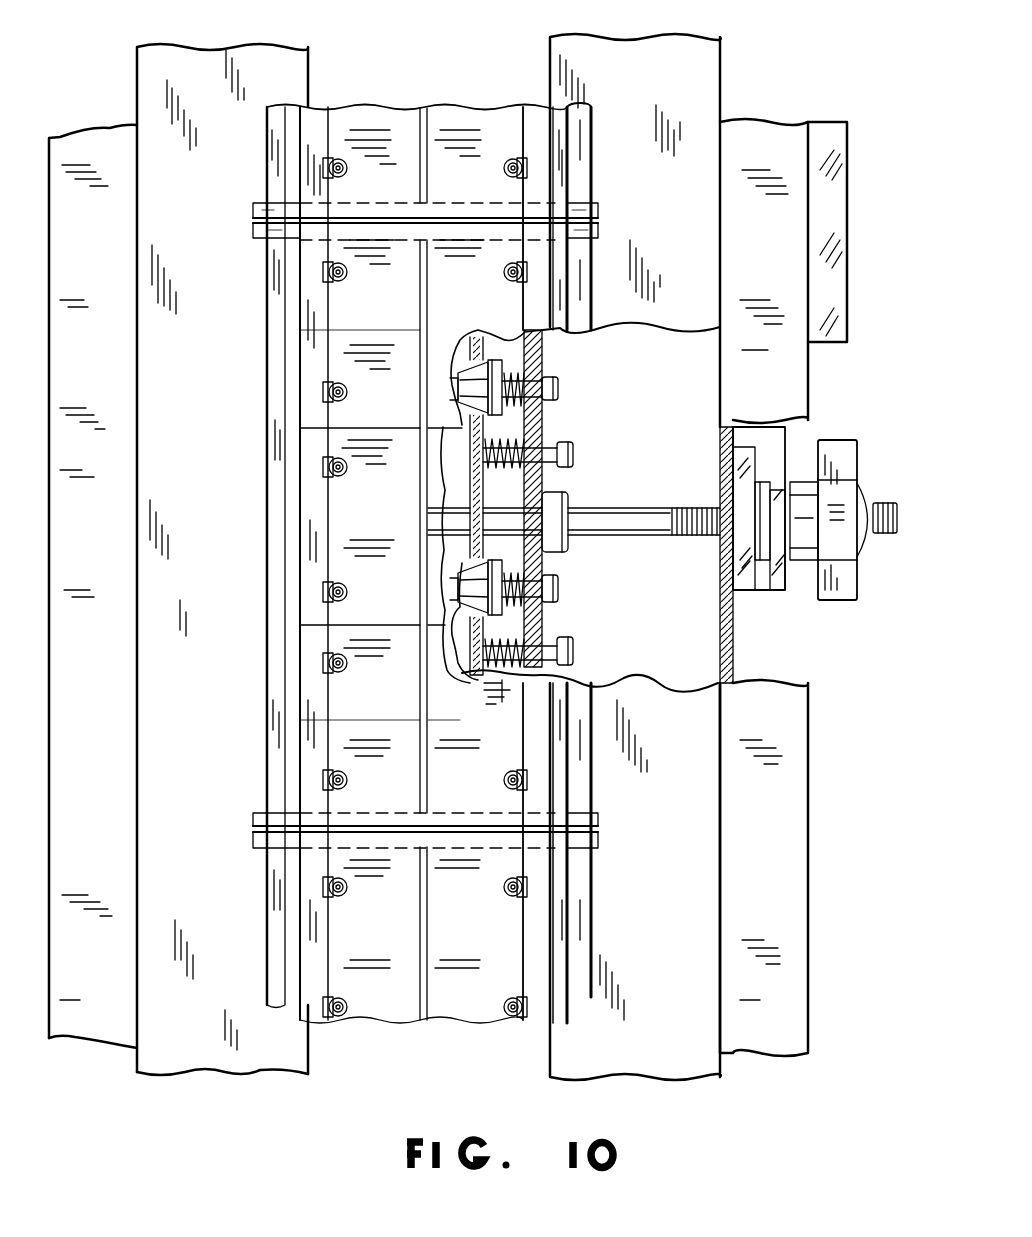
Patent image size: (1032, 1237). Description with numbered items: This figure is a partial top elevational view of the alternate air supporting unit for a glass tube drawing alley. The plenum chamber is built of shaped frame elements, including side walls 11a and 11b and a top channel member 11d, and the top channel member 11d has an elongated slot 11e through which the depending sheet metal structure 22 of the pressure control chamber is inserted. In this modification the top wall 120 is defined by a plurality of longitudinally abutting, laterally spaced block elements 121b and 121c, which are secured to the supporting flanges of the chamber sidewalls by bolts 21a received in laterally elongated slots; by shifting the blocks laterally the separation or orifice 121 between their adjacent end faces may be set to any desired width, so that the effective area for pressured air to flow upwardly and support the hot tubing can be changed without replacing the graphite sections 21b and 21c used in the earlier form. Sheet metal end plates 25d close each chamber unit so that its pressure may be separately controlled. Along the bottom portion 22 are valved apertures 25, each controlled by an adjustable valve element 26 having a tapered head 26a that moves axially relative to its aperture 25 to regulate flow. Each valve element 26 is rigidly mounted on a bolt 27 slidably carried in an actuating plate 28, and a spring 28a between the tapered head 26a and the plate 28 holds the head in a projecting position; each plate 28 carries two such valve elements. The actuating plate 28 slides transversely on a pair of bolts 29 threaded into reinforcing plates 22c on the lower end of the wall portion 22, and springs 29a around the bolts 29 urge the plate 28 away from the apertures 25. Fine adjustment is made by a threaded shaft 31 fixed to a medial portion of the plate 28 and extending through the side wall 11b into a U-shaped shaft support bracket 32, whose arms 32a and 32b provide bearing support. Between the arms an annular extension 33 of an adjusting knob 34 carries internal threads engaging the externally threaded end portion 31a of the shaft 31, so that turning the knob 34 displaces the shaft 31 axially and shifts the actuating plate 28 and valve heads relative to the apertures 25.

The side wall frame element 11a is at (103, 672).
The side wall frame element 11b is at (727, 668).
The top channel member 11d is at (663, 921).
The elongated slot 11e is at (550, 1058).
The top wall 120 is at (483, 105).
The orifice 121 is at (425, 122).
The block element 121b is at (360, 248).
The block element 121c is at (455, 240).
The bolts 21a is at (506, 165).
The top wall section 21b is at (369, 1012).
The top wall section 21c is at (492, 1010).
The depending sheet metal structure 22 is at (470, 490).
The reinforcing plates 22c is at (475, 680).
The valved apertures 25 is at (450, 381).
The sheet metal end plates 25d is at (598, 229).
The adjustable valve element 26 is at (495, 358).
The tapered head 26a is at (464, 402).
The bolt 27 is at (560, 389).
The actuating plate 28 is at (537, 620).
The spring 28a is at (508, 372).
The bolts 29 is at (575, 456).
The springs 29a is at (495, 442).
The threaded shaft 31 is at (628, 510).
The externally threaded end portion 31a is at (890, 505).
The shaft support bracket 32 is at (767, 453).
The bracket arm 32a is at (747, 453).
The bracket arm 32b is at (795, 533).
The annular extension 33 is at (770, 485).
The adjusting knob 34 is at (853, 600).